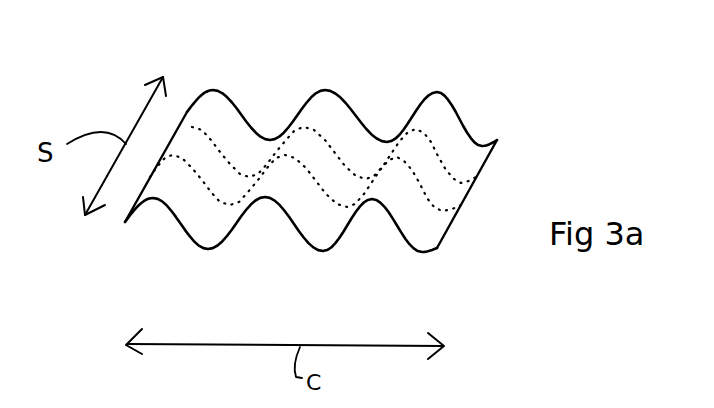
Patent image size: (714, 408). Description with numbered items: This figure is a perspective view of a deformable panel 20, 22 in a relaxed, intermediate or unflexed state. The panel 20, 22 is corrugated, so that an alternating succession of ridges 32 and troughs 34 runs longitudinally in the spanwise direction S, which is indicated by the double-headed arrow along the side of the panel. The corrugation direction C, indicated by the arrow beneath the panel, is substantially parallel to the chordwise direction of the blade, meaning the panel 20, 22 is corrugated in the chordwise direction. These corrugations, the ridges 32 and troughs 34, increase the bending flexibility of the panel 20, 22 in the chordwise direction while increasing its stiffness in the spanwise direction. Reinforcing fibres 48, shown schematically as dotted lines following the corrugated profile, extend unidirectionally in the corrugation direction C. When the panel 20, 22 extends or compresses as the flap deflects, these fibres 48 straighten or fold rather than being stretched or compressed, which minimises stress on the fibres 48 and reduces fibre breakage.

The deformable panel 20 is at (380, 141).
The deformable panel 22 is at (528, 106).
The ridges 32 is at (208, 107).
The troughs 34 is at (215, 232).
The reinforcing fibres 48 is at (336, 139).